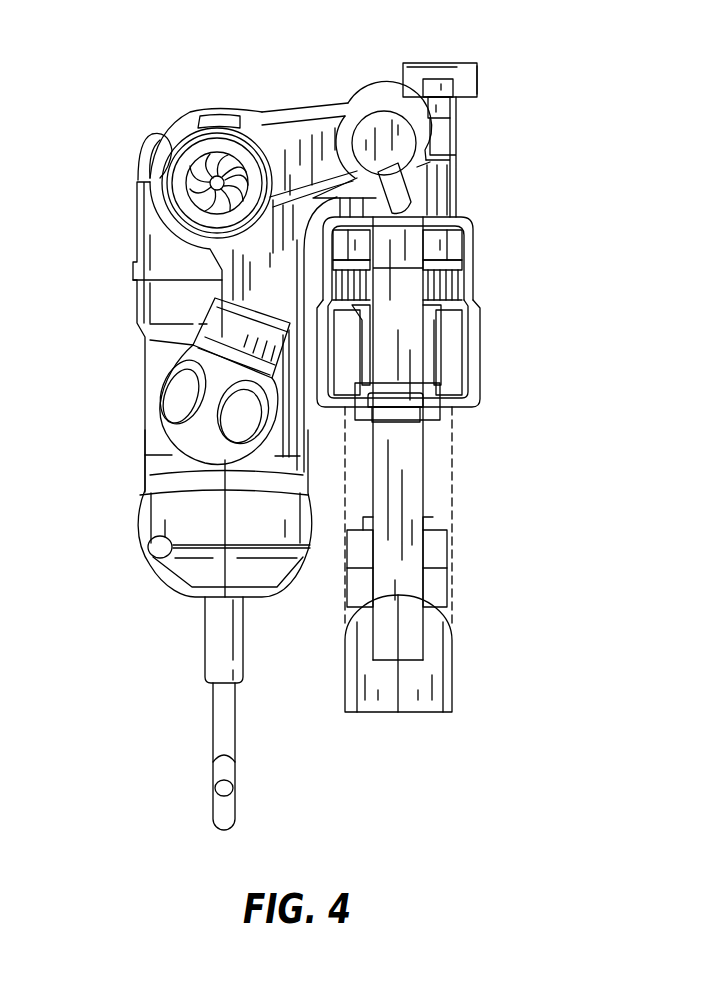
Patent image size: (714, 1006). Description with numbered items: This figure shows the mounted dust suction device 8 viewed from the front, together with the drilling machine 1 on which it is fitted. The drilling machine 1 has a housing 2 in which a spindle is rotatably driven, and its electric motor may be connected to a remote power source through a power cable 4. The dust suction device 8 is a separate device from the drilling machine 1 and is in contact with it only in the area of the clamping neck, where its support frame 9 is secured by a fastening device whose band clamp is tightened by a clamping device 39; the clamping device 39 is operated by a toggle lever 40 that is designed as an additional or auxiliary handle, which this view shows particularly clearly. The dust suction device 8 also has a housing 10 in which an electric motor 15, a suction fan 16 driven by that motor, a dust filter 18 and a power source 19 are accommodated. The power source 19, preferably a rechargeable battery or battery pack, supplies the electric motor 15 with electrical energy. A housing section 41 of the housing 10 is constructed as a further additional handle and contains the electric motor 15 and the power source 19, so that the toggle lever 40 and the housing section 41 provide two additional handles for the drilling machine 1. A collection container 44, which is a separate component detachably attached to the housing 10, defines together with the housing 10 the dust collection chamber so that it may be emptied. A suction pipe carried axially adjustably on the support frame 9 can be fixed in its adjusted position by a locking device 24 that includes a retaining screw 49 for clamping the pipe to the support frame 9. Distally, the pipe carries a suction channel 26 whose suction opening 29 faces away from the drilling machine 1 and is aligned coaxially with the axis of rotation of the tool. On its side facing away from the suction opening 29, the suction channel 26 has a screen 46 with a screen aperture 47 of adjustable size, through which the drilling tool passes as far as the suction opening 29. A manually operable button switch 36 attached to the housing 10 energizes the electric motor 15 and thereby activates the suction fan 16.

The drilling machine 1 is at (137, 211).
The housing 2 is at (177, 297).
The power cable 4 is at (220, 732).
The dust suction device 8 is at (480, 337).
The support frame 9 is at (313, 116).
The housing 10 is at (455, 487).
The electric motor 15 is at (440, 432).
The suction fan 16 is at (465, 240).
The dust filter 18 is at (462, 287).
The power source 19 is at (433, 583).
The locking device 24 is at (478, 81).
The suction channel 26 is at (281, 140).
The suction opening 29 is at (223, 133).
The button switch 36 is at (400, 404).
The clamping device 39 is at (150, 435).
The toggle lever 40 is at (150, 428).
The housing section 41 is at (455, 518).
The collection container 44 is at (482, 360).
The screen 46 is at (197, 177).
The screen aperture 47 is at (220, 173).
The retaining screw 49 is at (440, 63).